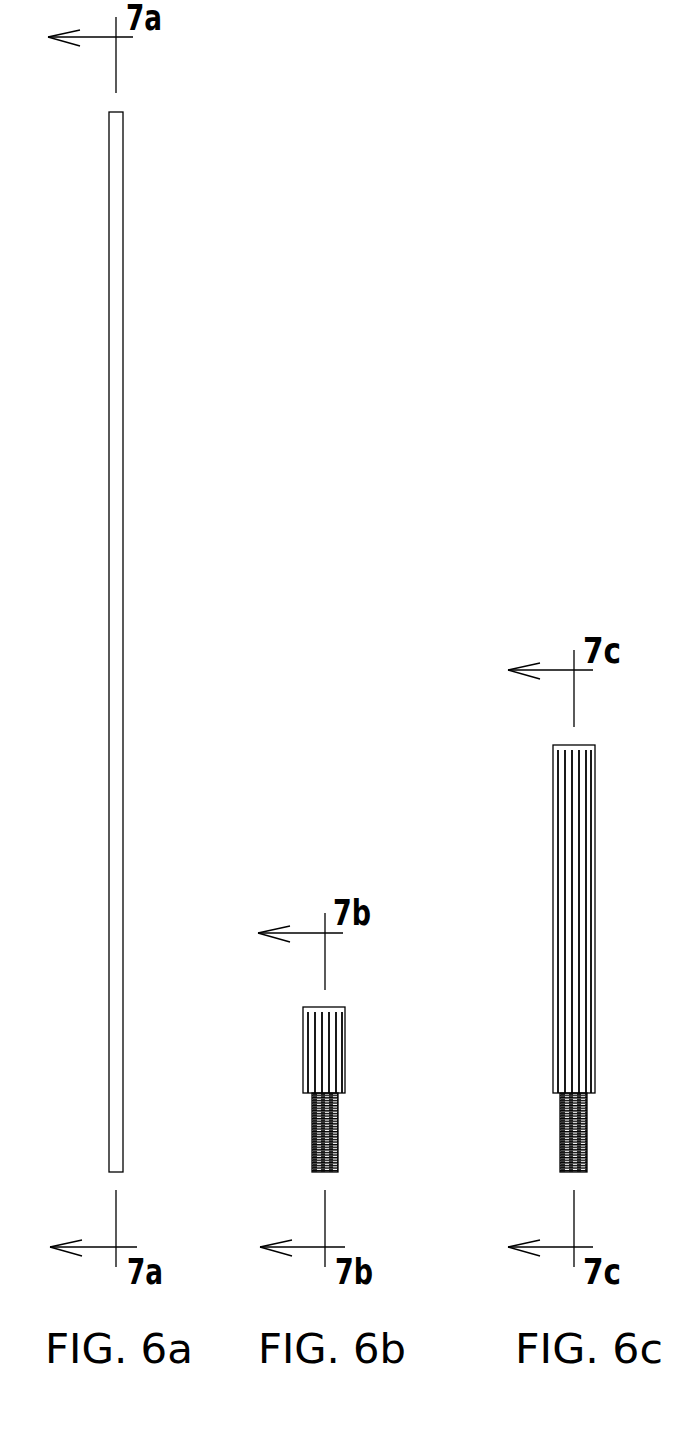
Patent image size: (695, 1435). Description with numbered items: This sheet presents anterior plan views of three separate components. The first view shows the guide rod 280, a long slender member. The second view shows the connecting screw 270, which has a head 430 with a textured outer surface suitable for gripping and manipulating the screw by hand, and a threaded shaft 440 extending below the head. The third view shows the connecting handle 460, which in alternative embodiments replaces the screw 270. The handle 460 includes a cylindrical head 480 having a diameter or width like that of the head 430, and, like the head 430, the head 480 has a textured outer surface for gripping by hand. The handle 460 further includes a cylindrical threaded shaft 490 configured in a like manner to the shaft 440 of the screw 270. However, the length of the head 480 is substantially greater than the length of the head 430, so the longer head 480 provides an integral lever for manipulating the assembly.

In FIG. 6a, the guide rod 280 is at (168, 138).
In FIG. 6b, the connecting screw 270 is at (332, 1040).
In FIG. 6b, the head 430 is at (305, 1040).
In FIG. 6b, the shaft 440 is at (313, 1138).
In FIG. 6c, the connecting handle 460 is at (510, 910).
In FIG. 6c, the cylindrical head 480 is at (555, 848).
In FIG. 6c, the cylindrical threaded shaft 490 is at (562, 1138).